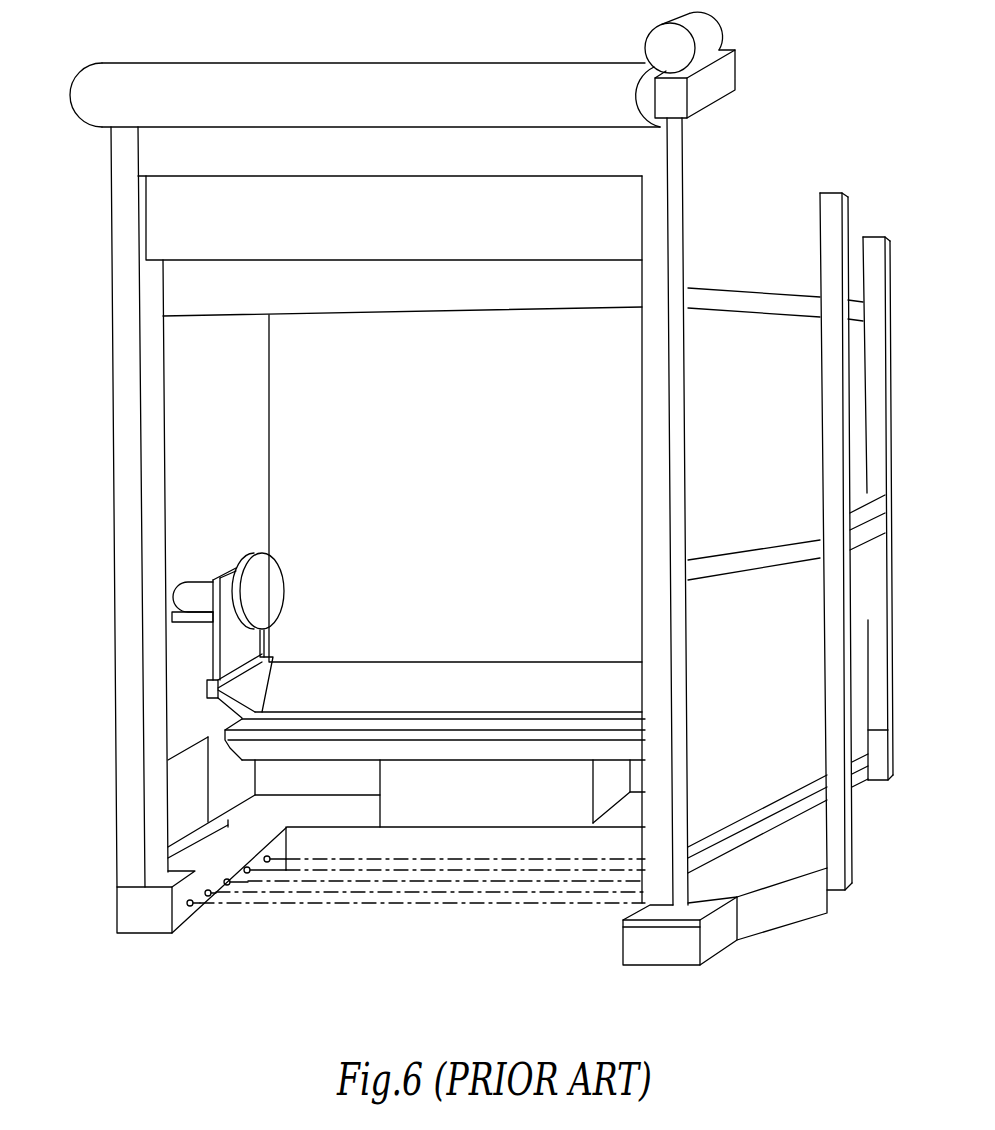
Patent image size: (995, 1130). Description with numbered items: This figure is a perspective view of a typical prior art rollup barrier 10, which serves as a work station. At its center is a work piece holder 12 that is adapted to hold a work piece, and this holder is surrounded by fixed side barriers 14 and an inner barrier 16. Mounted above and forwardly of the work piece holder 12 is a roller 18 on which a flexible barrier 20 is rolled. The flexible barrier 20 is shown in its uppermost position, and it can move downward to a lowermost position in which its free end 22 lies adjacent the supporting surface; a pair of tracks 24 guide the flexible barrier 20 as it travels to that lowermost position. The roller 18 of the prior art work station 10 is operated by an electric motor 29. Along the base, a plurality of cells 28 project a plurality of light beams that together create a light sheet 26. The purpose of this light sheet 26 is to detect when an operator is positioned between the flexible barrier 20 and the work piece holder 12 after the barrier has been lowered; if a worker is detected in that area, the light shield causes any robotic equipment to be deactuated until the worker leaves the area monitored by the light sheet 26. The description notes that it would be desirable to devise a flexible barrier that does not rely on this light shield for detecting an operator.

The rollup barrier 10 is at (118, 30).
The work piece holder 12 is at (263, 657).
The fixed side barriers 14 is at (251, 512).
The inner barrier 16 is at (492, 325).
The roller 18 is at (312, 65).
The flexible barrier 20 is at (245, 191).
The free end 22 is at (294, 261).
The tracks 24 is at (121, 548).
The light sheet 26 is at (456, 903).
The cells 28 is at (208, 889).
The electric motor 29 is at (651, 42).